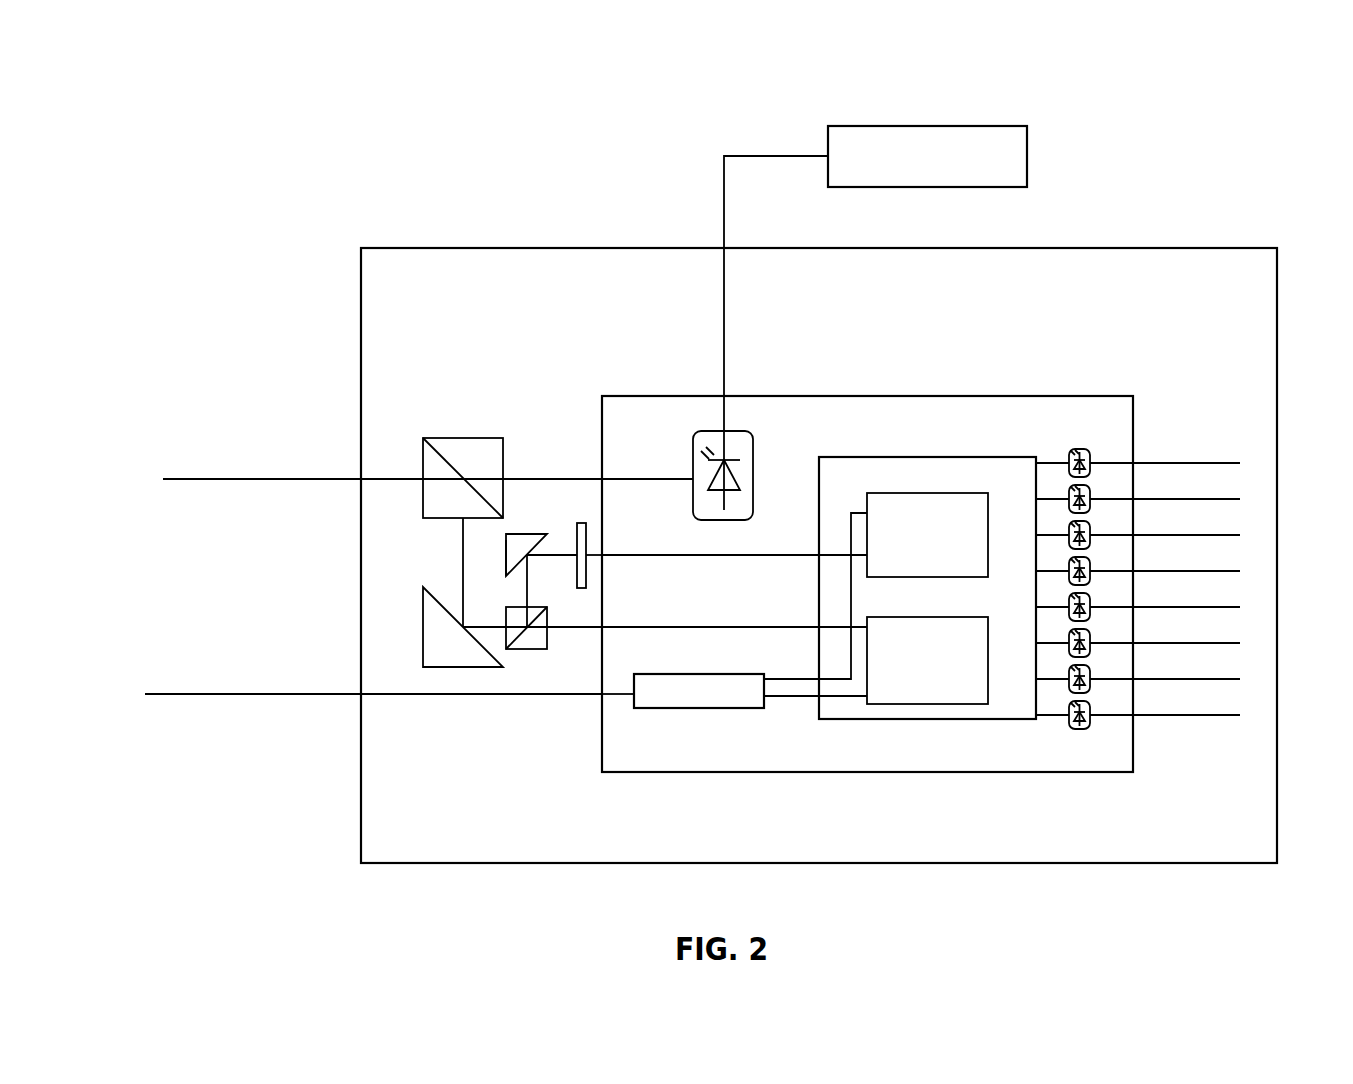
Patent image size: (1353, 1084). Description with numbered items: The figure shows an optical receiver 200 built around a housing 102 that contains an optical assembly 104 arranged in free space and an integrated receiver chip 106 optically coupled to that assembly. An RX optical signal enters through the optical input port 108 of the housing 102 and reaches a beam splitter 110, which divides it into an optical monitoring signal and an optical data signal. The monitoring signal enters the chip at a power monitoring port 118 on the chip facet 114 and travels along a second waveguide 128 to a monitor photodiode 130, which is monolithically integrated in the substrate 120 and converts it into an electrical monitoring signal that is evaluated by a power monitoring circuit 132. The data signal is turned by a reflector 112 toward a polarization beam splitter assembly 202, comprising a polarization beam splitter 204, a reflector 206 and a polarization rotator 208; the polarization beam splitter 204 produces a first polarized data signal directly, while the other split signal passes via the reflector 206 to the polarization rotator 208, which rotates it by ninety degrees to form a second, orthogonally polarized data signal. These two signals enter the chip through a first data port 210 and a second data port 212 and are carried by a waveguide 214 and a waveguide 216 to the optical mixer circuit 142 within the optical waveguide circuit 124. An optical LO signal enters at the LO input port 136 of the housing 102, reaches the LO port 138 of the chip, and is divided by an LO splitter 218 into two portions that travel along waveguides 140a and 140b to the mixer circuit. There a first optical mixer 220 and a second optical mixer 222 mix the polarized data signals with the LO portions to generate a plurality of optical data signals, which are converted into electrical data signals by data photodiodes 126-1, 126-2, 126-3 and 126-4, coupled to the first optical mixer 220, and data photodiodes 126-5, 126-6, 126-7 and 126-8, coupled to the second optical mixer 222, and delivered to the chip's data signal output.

The optical receiver 200 is at (237, 68).
The housing 102 is at (887, 247).
The optical assembly 104 is at (543, 298).
The integrated receiver chip 106 is at (887, 395).
The optical input port 108 is at (350, 488).
The beam splitter 110 is at (455, 437).
The reflector 112 is at (422, 613).
The chip facet 114 is at (1061, 392).
The power monitoring port 118 is at (600, 476).
The substrate 120 is at (1093, 418).
The optical waveguide circuit 124 is at (910, 437).
The data photodiode 126-1 is at (1087, 455).
The data photodiode 126-2 is at (1087, 491).
The data photodiode 126-3 is at (1087, 527).
The data photodiode 126-4 is at (1087, 563).
The data photodiode 126-5 is at (1087, 599).
The data photodiode 126-6 is at (1087, 635).
The data photodiode 126-7 is at (1087, 671).
The data photodiode 126-8 is at (1087, 707).
The second waveguide 128 is at (618, 480).
The monitor photodiode 130 is at (753, 452).
The power monitoring circuit 132 is at (1027, 153).
The LO input port 136 is at (352, 697).
The LO port 138 is at (594, 700).
The waveguide 140a is at (792, 678).
The waveguide 140b is at (783, 697).
The optical mixer circuit 142 is at (927, 456).
The polarization beam splitter assembly 202 is at (560, 535).
The polarization beam splitter 204 is at (522, 650).
The reflector 206 is at (506, 563).
The polarization rotator 208 is at (586, 540).
The first data port 210 is at (599, 630).
The second data port 212 is at (599, 560).
The waveguide 214 is at (688, 628).
The waveguide 216 is at (763, 554).
The LO splitter 218 is at (688, 708).
The first optical mixer 220 is at (957, 579).
The second optical mixer 222 is at (959, 706).